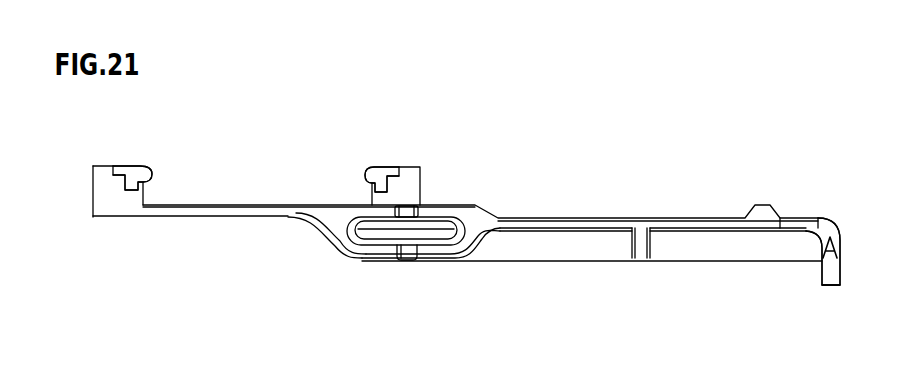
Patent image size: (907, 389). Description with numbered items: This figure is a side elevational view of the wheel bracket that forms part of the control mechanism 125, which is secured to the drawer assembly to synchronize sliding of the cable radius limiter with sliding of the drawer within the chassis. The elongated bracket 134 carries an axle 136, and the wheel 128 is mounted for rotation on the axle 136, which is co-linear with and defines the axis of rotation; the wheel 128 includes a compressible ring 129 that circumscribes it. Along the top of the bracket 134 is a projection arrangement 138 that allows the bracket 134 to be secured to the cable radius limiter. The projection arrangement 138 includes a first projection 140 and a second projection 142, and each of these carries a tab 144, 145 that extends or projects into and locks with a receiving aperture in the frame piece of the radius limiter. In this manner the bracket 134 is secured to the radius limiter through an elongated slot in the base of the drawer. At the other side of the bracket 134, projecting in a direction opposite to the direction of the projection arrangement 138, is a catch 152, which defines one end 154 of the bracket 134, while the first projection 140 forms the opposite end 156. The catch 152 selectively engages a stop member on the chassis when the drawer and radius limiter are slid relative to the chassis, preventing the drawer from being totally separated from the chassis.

The control mechanism 125 is at (385, 108).
The projection arrangement 138 is at (255, 136).
The first projection 140 is at (107, 165).
The second projection 142 is at (388, 166).
The tab 144 is at (148, 168).
The tab 145 is at (366, 174).
The opposite end 156 is at (93, 193).
The wheel 128 is at (433, 219).
The compressible ring 129 is at (458, 228).
The axle 136 is at (413, 249).
The bracket 134 is at (682, 217).
The end 154 is at (839, 260).
The catch 152 is at (822, 282).